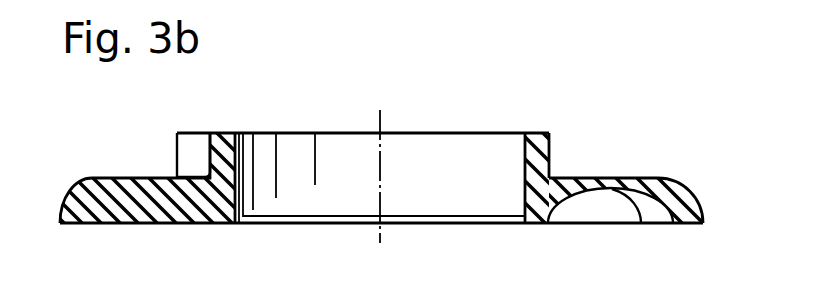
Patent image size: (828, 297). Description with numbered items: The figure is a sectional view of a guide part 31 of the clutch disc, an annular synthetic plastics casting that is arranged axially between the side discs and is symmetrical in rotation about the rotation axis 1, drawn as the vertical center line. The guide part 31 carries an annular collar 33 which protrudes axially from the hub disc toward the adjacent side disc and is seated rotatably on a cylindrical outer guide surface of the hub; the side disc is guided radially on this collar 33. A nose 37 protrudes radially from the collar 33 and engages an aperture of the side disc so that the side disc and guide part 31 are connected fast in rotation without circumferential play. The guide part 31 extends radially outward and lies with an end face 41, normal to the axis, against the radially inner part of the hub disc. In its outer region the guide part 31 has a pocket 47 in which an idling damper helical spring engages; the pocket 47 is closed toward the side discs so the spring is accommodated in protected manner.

The rotation axis 1 is at (382, 118).
The guide part 31 is at (175, 210).
The annular collar 33 is at (540, 148).
The nose 37 is at (188, 152).
The end face 41 is at (90, 226).
The pocket 47 is at (608, 203).